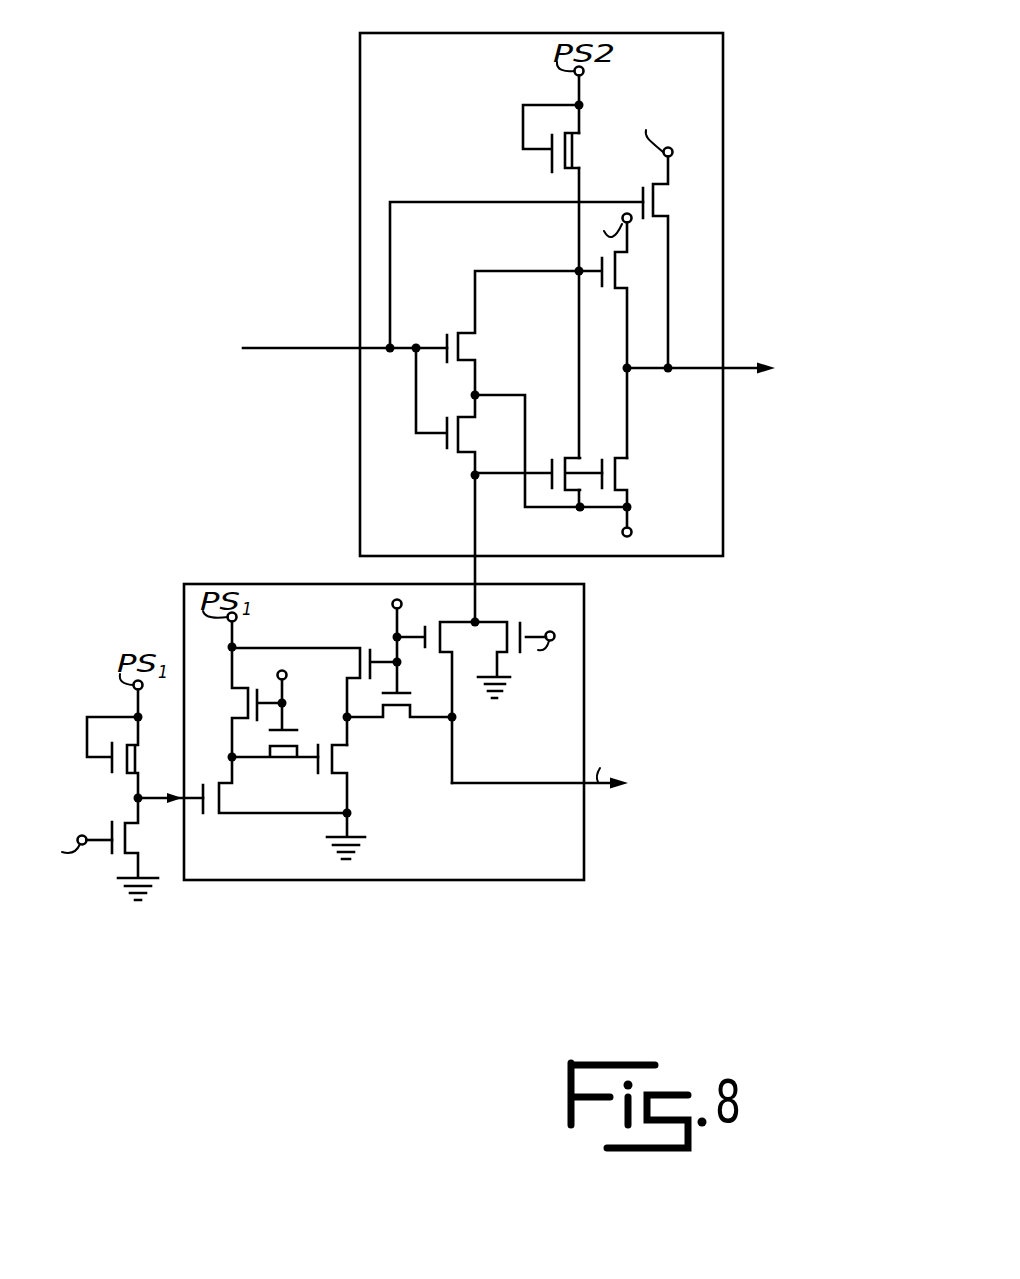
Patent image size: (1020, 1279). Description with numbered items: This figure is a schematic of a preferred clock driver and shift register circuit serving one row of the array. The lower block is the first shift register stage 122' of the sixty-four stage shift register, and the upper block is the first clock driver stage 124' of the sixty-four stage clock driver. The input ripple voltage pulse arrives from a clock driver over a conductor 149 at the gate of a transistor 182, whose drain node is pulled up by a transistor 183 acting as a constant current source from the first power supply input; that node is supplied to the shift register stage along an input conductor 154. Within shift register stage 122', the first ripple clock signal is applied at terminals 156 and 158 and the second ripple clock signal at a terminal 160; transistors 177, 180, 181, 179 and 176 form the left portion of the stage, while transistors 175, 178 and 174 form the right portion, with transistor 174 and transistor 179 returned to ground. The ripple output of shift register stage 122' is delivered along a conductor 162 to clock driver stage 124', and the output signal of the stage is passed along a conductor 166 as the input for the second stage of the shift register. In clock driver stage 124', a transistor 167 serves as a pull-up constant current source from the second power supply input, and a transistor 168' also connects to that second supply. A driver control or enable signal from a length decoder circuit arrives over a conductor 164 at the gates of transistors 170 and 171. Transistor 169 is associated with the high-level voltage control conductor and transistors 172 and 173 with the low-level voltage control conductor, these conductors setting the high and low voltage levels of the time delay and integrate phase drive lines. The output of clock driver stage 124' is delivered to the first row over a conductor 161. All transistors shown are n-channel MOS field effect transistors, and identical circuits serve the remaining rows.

The clock driver stage 124' is at (585, 294).
The transistor 167 is at (549, 158).
The transistor 168' is at (680, 241).
The transistor 169 is at (630, 274).
The conductor 161 is at (744, 365).
The conductor 164 is at (297, 351).
The transistor 170 is at (447, 347).
The transistor 171 is at (446, 440).
The transistor 172 is at (552, 456).
The transistor 173 is at (650, 454).
The conductor 162 is at (478, 567).
The shift register stage 122' is at (384, 753).
The transistor 174 is at (508, 639).
The transistor 175 is at (426, 649).
The terminal 158 is at (555, 620).
The terminal 160 is at (392, 604).
The transistor 178 is at (395, 719).
The transistor 176 is at (357, 662).
The transistor 177 is at (247, 703).
The terminal 156 is at (280, 672).
The transistor 180 is at (281, 748).
The transistor 179 is at (346, 762).
The transistor 181 is at (224, 800).
The input conductor 154 is at (158, 797).
The transistor 183 is at (138, 752).
The transistor 182 is at (134, 842).
The conductor 149 is at (82, 835).
The conductor 166 is at (546, 785).